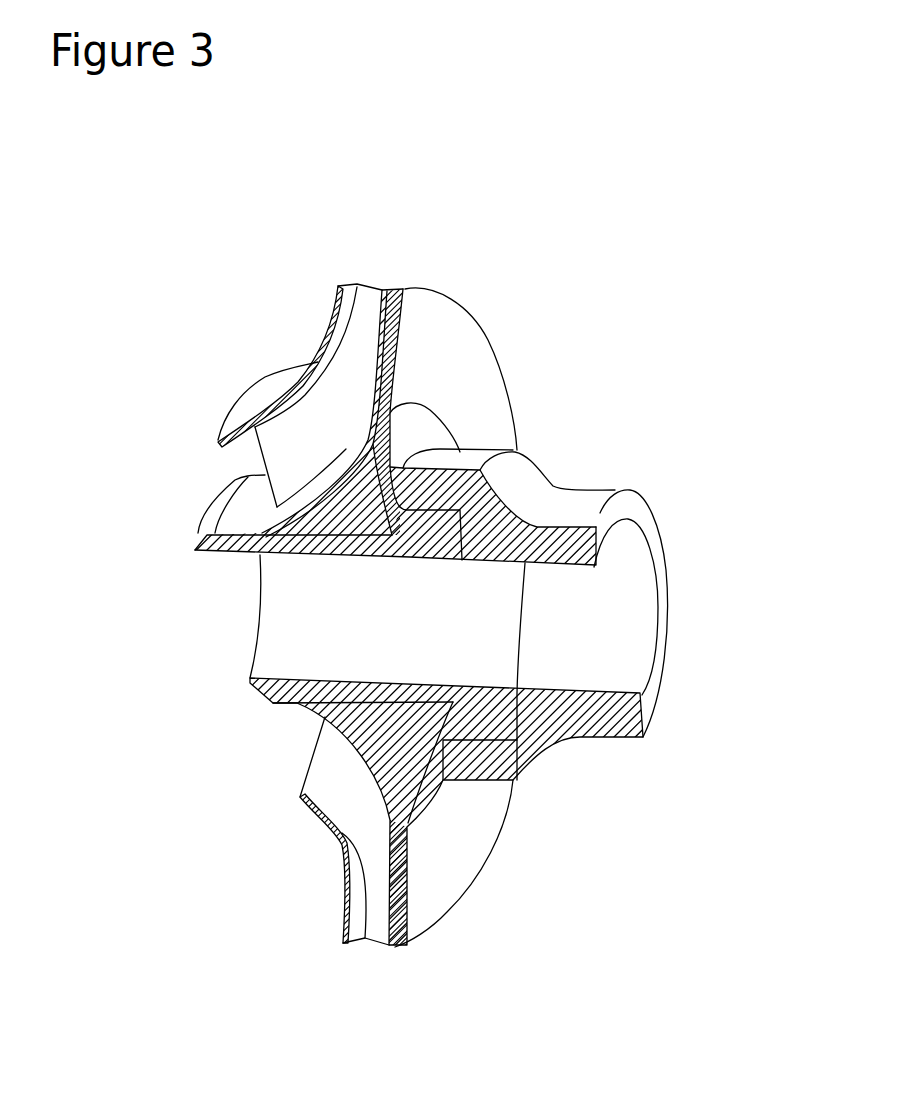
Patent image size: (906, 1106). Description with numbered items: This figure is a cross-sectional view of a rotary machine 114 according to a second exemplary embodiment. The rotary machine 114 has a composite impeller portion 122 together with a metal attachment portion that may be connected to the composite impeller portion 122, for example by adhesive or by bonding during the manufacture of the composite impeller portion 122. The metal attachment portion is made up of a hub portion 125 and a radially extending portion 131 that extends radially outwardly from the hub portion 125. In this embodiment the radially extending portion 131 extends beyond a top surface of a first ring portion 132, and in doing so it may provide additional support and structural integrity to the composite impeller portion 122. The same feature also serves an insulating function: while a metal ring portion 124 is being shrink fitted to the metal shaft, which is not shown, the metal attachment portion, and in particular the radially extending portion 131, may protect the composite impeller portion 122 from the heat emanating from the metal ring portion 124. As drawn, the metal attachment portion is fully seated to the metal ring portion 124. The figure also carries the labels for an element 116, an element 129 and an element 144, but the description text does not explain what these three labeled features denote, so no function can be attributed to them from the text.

The rotary machine 114 is at (141, 306).
The hub 116 is at (166, 448).
The composite impeller portion 122 is at (328, 347).
The metal ring portion 124 is at (580, 514).
The hub portion 125 is at (228, 552).
The flange 129 is at (541, 474).
The radially extending portion 131 is at (412, 423).
The first ring portion 132 is at (430, 487).
The bore 144 is at (638, 592).